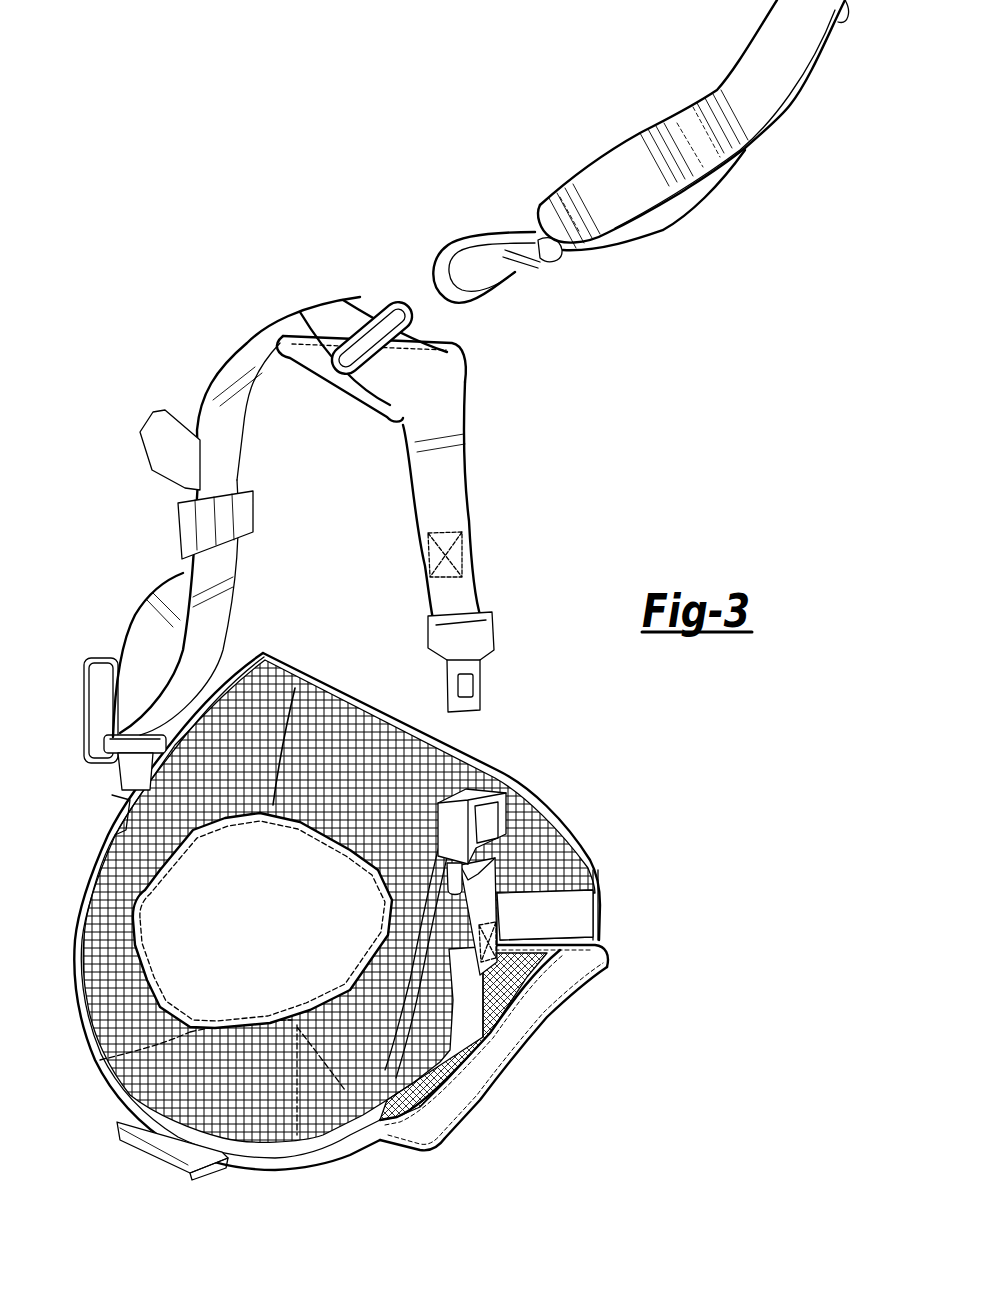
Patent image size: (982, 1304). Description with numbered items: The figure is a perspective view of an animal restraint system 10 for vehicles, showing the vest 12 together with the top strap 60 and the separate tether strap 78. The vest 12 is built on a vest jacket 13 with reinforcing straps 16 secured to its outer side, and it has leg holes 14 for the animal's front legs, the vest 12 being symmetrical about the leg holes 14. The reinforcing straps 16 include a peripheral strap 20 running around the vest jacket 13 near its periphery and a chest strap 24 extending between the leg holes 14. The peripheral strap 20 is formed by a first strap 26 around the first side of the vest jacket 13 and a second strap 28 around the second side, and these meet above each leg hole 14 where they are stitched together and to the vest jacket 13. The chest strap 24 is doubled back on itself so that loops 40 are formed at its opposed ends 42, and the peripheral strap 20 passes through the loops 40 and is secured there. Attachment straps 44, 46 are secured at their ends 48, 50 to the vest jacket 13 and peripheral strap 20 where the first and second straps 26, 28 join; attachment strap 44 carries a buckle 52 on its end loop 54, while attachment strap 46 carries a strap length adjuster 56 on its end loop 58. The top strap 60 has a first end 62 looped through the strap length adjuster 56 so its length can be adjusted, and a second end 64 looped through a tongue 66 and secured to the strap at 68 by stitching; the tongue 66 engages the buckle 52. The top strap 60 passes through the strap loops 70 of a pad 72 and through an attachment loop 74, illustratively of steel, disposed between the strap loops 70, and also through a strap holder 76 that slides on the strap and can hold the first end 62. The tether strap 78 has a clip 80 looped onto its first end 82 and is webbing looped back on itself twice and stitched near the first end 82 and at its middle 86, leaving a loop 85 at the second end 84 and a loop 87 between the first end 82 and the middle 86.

The animal restraint system 10 is at (726, 448).
The vest 12 is at (617, 815).
The vest jacket 13 is at (112, 1015).
The leg holes 14 is at (152, 957).
The reinforcing straps 16 is at (614, 945).
The peripheral strap 20 is at (482, 990).
The chest strap 24 is at (216, 1180).
The first strap 26 is at (466, 1047).
The second strap 28 is at (600, 918).
The loops 40 is at (196, 1174).
The opposed ends 42 is at (152, 1150).
The attachment strap 44 is at (490, 899).
The attachment strap 46 is at (110, 795).
The end 48 is at (499, 938).
The end 50 is at (112, 830).
The buckle 52 is at (497, 792).
The end loop 54 is at (490, 836).
The strap length adjuster 56 is at (87, 690).
The end loop 58 is at (103, 772).
The top strap 60 is at (218, 350).
The first end 62 is at (128, 640).
The second end 64 is at (470, 597).
The tongue 66 is at (493, 682).
The securement location 68 is at (460, 556).
The strap loops 70 is at (320, 352).
The pad 72 is at (397, 424).
The attachment loop 74 is at (393, 300).
The strap holder 76 is at (250, 482).
The tether strap 78 is at (600, 150).
The clip 80 is at (465, 240).
The first end 82 is at (565, 265).
The second end 84 is at (846, 22).
The loop 85 is at (785, 105).
The middle 86 is at (715, 175).
The loop 87 is at (650, 212).